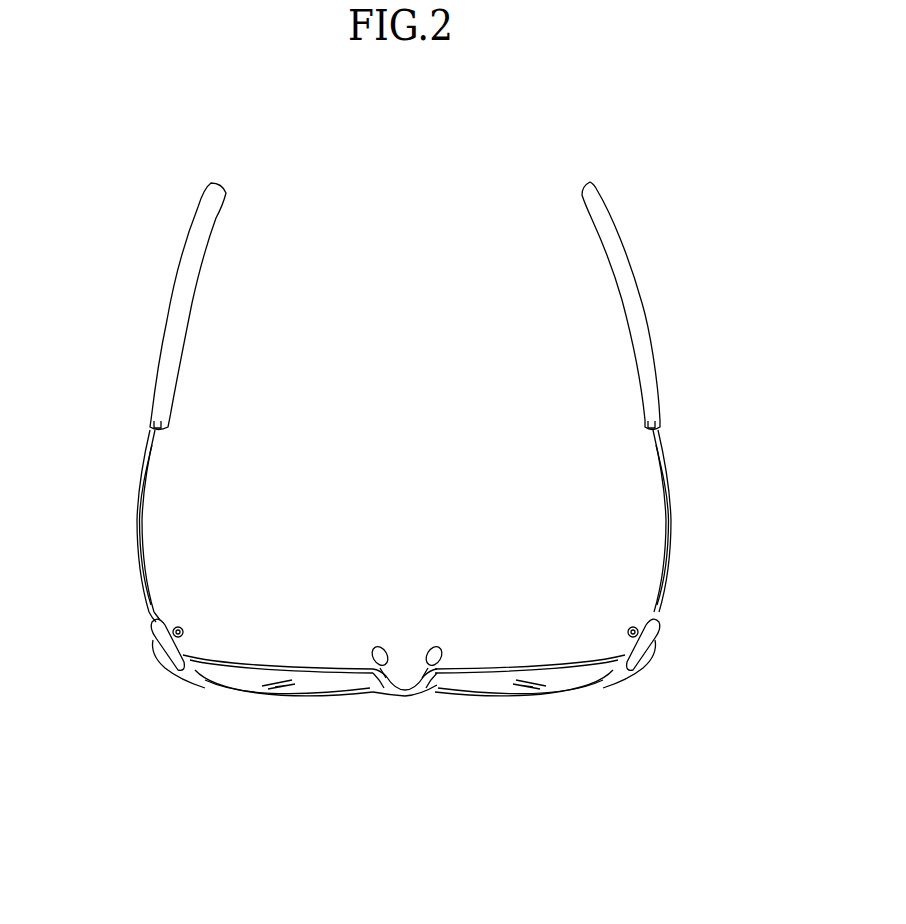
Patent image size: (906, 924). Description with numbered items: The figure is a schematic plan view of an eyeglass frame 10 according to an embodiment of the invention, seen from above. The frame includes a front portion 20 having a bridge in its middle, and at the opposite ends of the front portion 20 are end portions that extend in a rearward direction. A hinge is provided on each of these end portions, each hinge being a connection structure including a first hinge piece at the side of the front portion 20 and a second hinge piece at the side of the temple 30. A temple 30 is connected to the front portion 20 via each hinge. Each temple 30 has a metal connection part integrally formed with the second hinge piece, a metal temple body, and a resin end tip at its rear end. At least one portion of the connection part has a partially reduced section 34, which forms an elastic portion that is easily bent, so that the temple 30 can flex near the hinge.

The eyeglass frame 10 is at (440, 153).
The front portion 20 is at (532, 698).
The temple 30 is at (732, 343).
The reduced section 34 is at (153, 610).